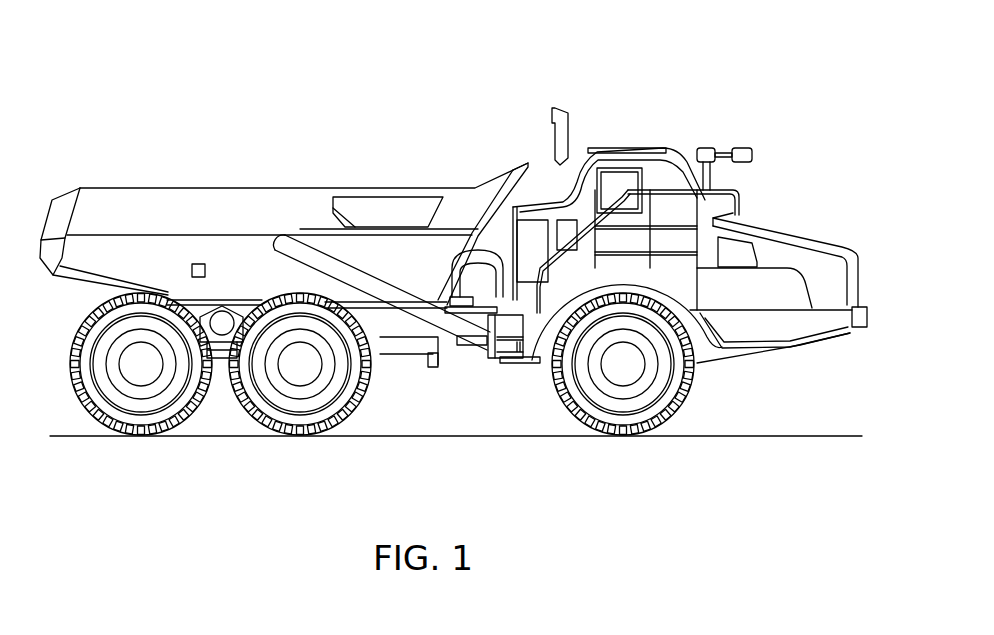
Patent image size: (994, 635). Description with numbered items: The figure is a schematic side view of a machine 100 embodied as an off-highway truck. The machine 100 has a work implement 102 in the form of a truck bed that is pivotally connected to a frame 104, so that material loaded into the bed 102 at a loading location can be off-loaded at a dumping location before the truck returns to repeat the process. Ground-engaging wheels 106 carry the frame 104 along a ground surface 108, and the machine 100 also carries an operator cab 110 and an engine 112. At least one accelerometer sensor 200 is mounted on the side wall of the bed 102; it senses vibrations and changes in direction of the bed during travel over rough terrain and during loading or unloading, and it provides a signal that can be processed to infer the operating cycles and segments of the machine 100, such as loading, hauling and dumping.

The machine 100 is at (776, 116).
The work implement 102 is at (189, 202).
The frame 104 is at (413, 330).
The wheels 106 is at (152, 408).
The ground surface 108 is at (779, 434).
The operator cab 110 is at (638, 148).
The engine 112 is at (786, 250).
The accelerometer sensor 200 is at (192, 269).